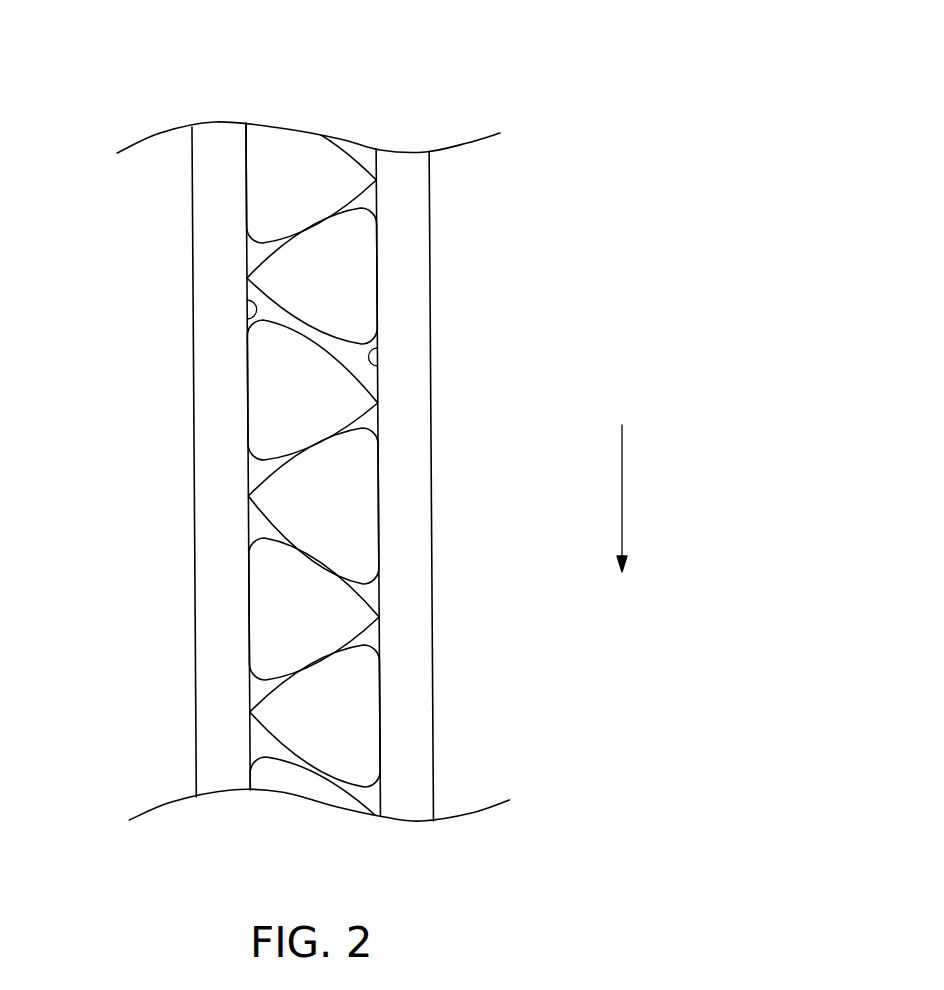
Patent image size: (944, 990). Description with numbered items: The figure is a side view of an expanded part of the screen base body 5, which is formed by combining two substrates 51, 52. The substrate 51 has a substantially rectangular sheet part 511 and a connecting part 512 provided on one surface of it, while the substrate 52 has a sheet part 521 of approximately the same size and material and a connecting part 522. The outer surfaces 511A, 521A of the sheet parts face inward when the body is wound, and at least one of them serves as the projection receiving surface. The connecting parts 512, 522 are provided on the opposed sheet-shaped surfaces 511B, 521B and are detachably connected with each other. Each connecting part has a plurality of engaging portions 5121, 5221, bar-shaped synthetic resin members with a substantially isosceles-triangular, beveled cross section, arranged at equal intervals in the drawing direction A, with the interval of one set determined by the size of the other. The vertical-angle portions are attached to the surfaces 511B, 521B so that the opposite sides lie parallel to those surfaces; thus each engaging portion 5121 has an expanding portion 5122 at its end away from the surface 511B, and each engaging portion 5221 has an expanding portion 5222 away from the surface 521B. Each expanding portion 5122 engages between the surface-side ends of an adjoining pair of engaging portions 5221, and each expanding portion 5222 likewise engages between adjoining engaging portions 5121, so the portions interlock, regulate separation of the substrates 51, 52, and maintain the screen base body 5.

The screen base body 5 is at (566, 114).
The substrate 51 is at (207, 162).
The substrate 52 is at (403, 160).
The sheet part 511 is at (205, 287).
The surface 511A is at (190, 402).
The surface 511B is at (247, 321).
The connecting part 512 is at (260, 256).
The engaging portion 5121 is at (237, 471).
The expanding portion 5122 is at (360, 274).
The sheet part 521 is at (412, 323).
The surface 521A is at (432, 402).
The surface 521B is at (378, 352).
The connecting part 522 is at (362, 197).
The engaging portion 5221 is at (389, 497).
The expanding portion 5222 is at (266, 178).
The drawing direction A is at (622, 487).